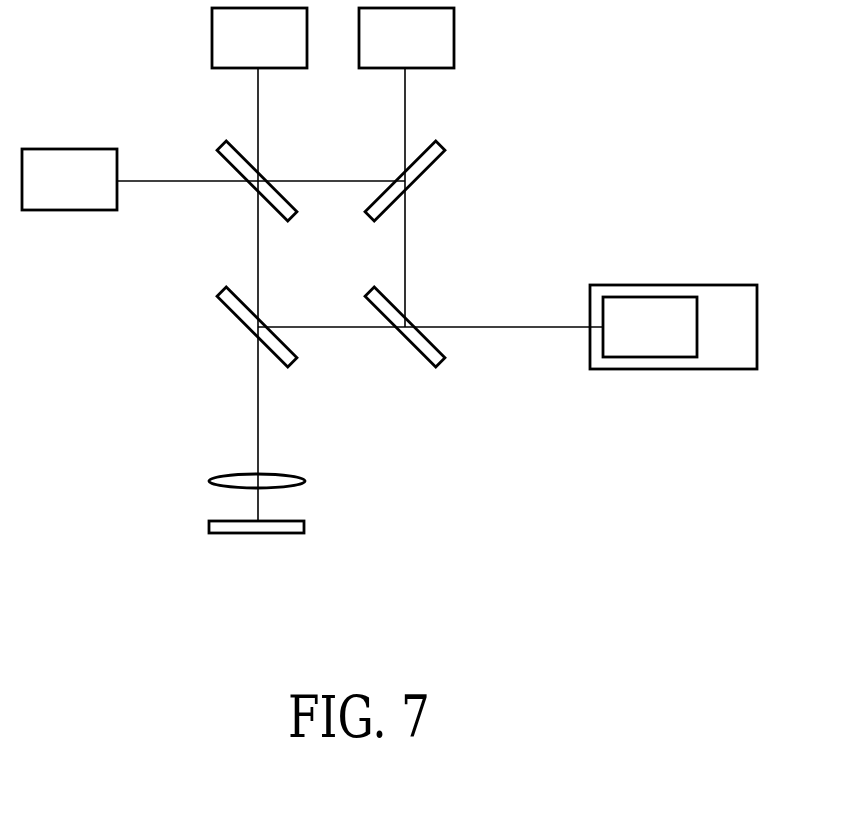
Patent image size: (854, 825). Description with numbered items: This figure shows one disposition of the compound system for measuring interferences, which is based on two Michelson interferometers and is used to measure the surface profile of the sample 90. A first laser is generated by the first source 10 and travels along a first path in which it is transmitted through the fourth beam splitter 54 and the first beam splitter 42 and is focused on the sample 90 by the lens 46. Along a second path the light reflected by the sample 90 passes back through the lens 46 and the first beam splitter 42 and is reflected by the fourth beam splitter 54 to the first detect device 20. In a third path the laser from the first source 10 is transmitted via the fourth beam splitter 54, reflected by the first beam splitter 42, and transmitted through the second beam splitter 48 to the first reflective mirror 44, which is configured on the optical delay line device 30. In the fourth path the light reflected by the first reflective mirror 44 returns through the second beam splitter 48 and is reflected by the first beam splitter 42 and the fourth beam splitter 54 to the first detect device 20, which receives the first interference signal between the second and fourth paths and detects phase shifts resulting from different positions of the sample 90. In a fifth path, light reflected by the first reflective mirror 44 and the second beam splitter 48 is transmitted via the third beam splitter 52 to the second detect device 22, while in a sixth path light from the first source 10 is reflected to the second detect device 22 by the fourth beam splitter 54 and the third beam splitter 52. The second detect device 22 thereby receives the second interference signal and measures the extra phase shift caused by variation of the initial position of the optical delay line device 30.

The first source 10 is at (259, 38).
The second detect device 22 is at (406, 38).
The first detect device 20 is at (69, 179).
The optical delay line device 30 is at (673, 327).
The first reflective mirror 44 is at (650, 327).
The fourth beam splitter 54 is at (220, 150).
The third beam splitter 52 is at (443, 147).
The first beam splitter 42 is at (287, 367).
The second beam splitter 48 is at (433, 367).
The lens 46 is at (215, 477).
The sample 90 is at (213, 533).